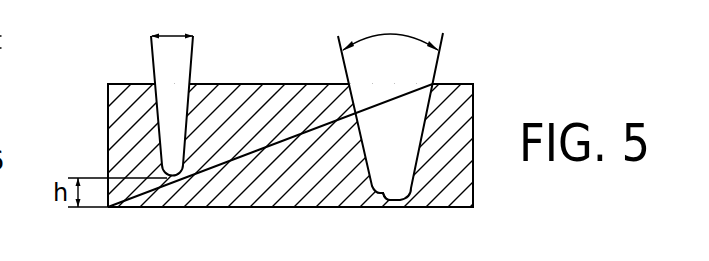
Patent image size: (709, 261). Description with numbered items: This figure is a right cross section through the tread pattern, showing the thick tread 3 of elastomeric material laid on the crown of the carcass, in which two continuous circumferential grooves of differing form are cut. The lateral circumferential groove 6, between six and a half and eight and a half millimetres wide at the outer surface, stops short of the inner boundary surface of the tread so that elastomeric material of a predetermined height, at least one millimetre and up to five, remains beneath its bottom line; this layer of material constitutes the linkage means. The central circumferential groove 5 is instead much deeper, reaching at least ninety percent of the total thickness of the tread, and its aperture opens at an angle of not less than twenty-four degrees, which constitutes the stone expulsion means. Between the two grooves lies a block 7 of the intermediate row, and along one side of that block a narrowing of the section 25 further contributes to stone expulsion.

The tread 3 is at (229, 195).
The central circumferential groove 5 is at (403, 70).
The lateral circumferential groove 6 is at (172, 75).
The block of the intermediate row 7 is at (257, 130).
The narrowing of the section 25 is at (380, 190).